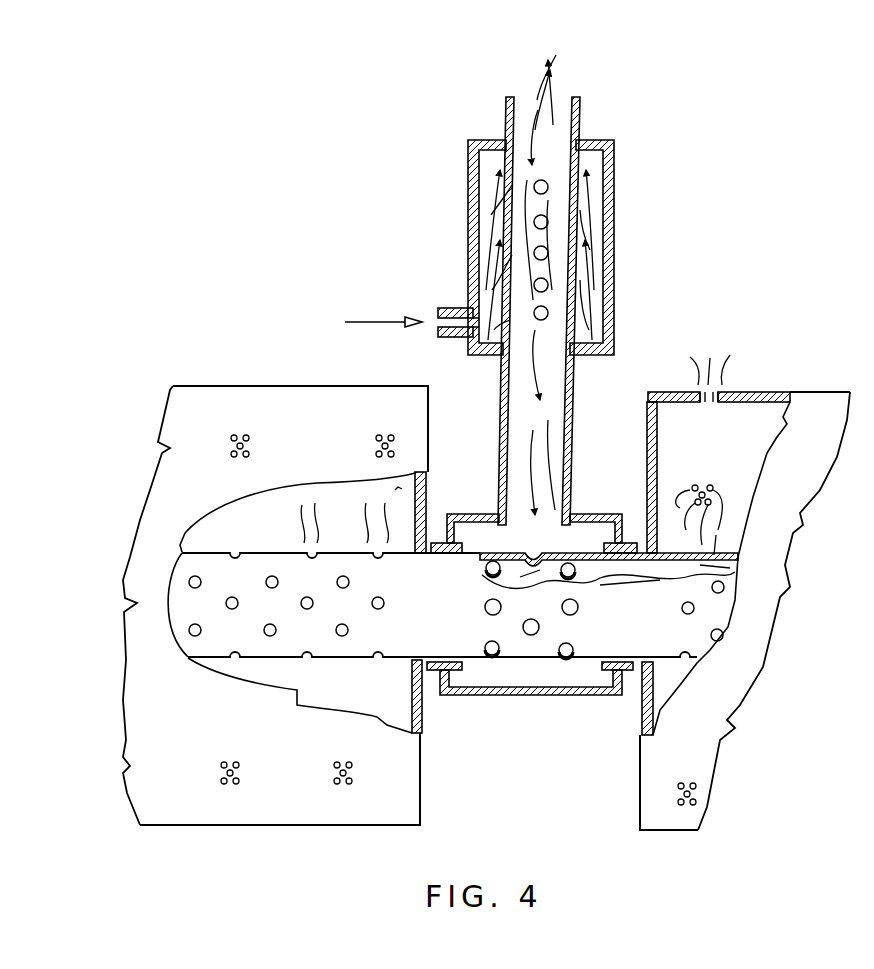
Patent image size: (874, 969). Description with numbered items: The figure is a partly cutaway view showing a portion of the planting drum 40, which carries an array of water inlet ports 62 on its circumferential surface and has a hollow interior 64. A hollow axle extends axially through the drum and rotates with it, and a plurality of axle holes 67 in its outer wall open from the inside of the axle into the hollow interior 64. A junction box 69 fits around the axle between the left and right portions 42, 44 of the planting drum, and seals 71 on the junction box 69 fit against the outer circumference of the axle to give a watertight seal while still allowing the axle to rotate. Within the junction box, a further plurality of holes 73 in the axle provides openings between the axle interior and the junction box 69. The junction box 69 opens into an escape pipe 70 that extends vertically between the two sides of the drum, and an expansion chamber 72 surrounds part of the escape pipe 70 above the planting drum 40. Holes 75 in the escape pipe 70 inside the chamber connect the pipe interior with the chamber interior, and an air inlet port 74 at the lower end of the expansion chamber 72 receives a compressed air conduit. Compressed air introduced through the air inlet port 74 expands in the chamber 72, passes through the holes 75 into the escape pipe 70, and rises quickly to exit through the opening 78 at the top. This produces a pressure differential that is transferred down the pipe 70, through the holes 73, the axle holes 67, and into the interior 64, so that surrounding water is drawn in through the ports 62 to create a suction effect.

The planting drum 40 is at (203, 370).
The left portion of the planting drum 42 is at (275, 631).
The right portion of the planting drum 44 is at (745, 636).
The water inlet ports 62 is at (456, 547).
The hollow interior 64 is at (720, 380).
The axle holes 67 is at (453, 605).
The junction box 69 is at (530, 712).
The escape pipe 70 is at (569, 311).
The seals 71 is at (437, 540).
The expansion chamber 72 is at (579, 247).
The axle holes inside junction box 73 is at (530, 607).
The air inlet port 74 is at (461, 310).
The escape pipe holes 75 is at (610, 241).
The opening 78 is at (570, 72).